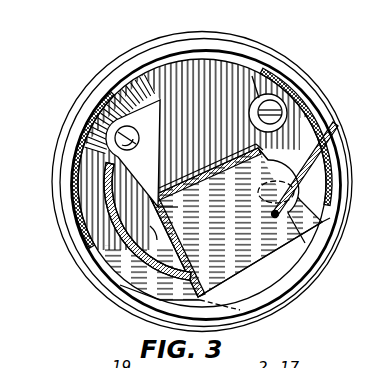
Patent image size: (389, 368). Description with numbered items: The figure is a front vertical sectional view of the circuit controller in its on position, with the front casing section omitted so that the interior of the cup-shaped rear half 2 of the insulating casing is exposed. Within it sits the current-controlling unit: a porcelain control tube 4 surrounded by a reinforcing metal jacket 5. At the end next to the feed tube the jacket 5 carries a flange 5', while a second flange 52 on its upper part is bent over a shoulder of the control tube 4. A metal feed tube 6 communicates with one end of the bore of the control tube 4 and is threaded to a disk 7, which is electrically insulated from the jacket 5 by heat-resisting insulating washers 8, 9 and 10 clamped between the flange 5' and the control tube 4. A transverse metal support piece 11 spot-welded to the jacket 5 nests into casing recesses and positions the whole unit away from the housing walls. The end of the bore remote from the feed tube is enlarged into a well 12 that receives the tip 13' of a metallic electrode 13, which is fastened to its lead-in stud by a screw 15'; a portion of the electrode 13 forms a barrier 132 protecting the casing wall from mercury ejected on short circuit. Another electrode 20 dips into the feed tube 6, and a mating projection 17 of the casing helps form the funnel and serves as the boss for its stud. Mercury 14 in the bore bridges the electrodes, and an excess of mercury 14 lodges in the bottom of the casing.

The rear half of casing 2 is at (258, 52).
The control tube 4 is at (264, 170).
The reinforcing metal jacket 5 is at (249, 222).
The flange of jacket 5' is at (137, 228).
The second flange of jacket 52 is at (258, 165).
The feed tube 6 is at (112, 266).
The disk 7 is at (178, 208).
The insulating washer 8 is at (165, 287).
The insulating washer 9 is at (245, 312).
The insulating washer 10 is at (265, 292).
The transverse metal support piece 11 is at (215, 165).
The well 12 is at (335, 147).
The metallic electrode 13 is at (325, 171).
The tip of electrode 13' is at (341, 241).
The barrier 132 is at (318, 117).
The mercury 14 is at (324, 167).
The screw 15' is at (295, 100).
The mating projection 17 is at (160, 112).
The electrode 20 is at (110, 133).